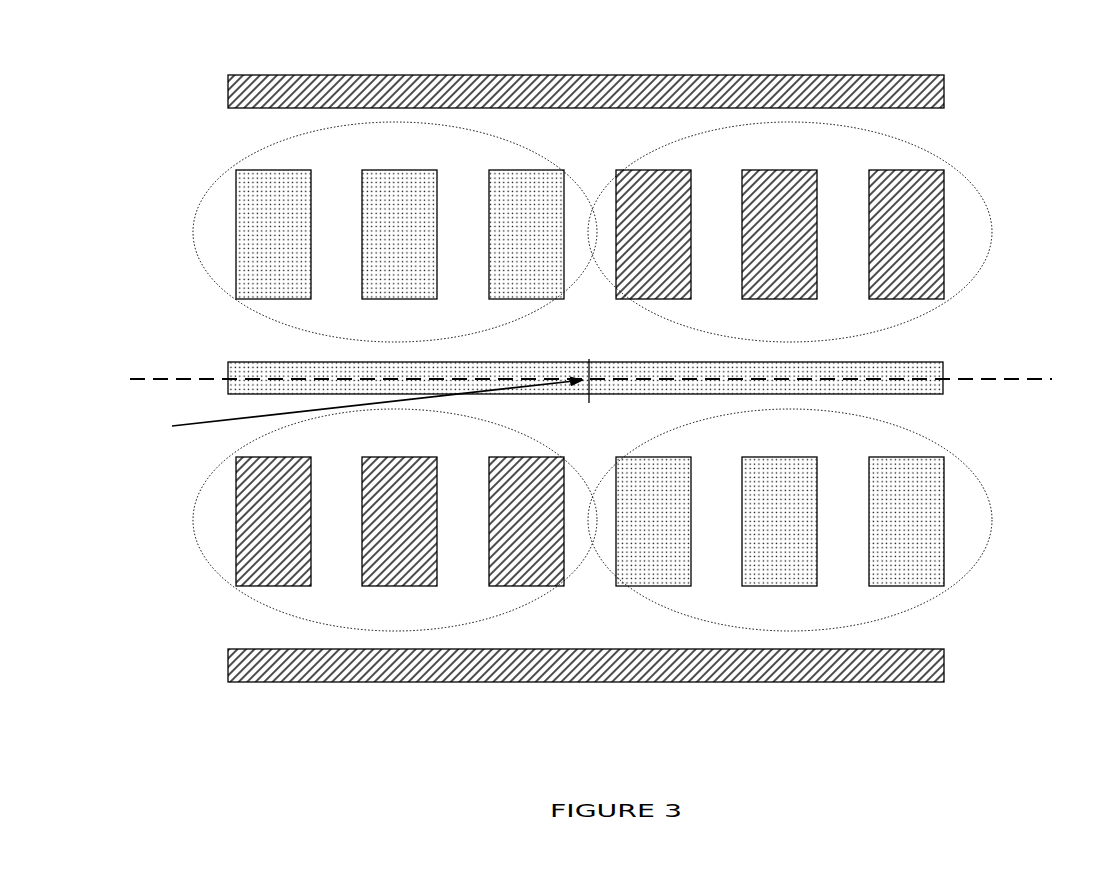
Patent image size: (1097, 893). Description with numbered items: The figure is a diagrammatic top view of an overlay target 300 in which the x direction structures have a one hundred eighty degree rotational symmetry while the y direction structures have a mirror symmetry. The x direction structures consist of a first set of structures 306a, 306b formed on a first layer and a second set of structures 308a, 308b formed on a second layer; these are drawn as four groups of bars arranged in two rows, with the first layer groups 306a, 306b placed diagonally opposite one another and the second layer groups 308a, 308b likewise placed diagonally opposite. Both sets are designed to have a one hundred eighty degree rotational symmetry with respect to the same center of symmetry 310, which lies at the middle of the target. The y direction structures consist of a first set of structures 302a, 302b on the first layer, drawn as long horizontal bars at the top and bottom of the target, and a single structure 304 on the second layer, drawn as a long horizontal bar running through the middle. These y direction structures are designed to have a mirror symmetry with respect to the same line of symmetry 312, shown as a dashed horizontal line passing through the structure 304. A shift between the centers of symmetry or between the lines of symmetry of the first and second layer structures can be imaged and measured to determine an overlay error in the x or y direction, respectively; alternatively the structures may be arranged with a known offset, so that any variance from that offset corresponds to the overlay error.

The overlay target 300 is at (138, 115).
The y direction structure of first set 302a is at (944, 79).
The y direction structure of first set 302b is at (944, 652).
The single y direction structure 304 is at (942, 362).
The x direction structure of first set 306a is at (993, 222).
The x direction structure of first set 306b is at (193, 538).
The x direction structure of second set 308a is at (193, 250).
The x direction structure of second set 308b is at (986, 510).
The center of symmetry 310 is at (362, 399).
The line of symmetry 312 is at (1017, 380).